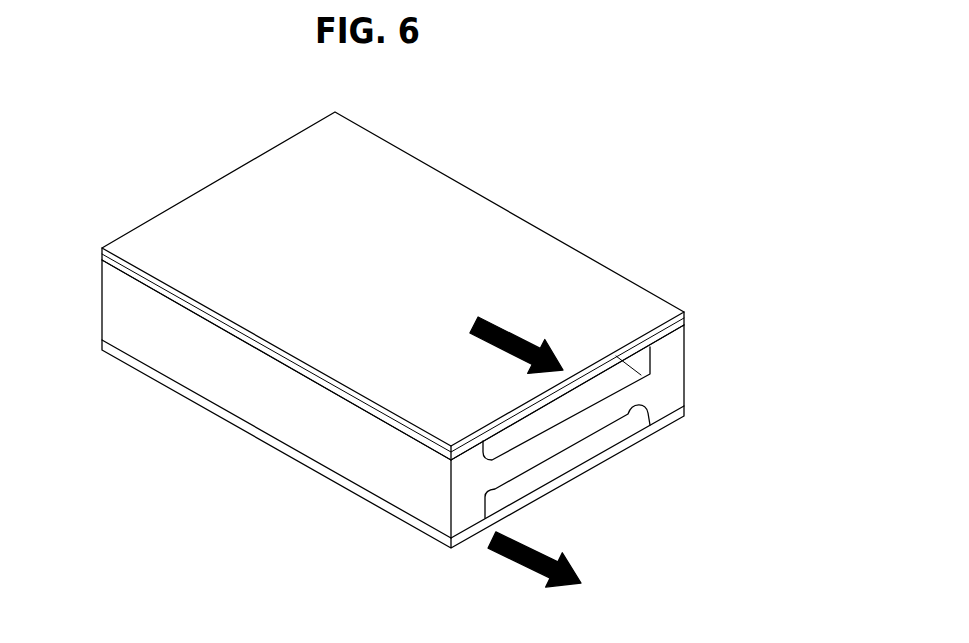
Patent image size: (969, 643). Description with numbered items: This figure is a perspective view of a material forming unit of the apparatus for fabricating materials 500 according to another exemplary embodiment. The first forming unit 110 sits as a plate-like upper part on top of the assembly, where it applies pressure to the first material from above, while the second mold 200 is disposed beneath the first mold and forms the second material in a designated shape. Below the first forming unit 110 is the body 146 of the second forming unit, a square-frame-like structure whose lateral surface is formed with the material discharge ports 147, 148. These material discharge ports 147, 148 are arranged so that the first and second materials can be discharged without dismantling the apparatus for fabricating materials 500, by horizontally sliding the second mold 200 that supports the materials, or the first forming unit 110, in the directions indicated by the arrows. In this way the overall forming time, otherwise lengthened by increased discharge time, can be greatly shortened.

The apparatus for fabricating materials 500 is at (615, 140).
The first forming unit 110 is at (608, 295).
The second mold 200 is at (696, 406).
The body 146 is at (233, 381).
The material discharge port 147 is at (580, 457).
The material discharge port 148 is at (618, 379).